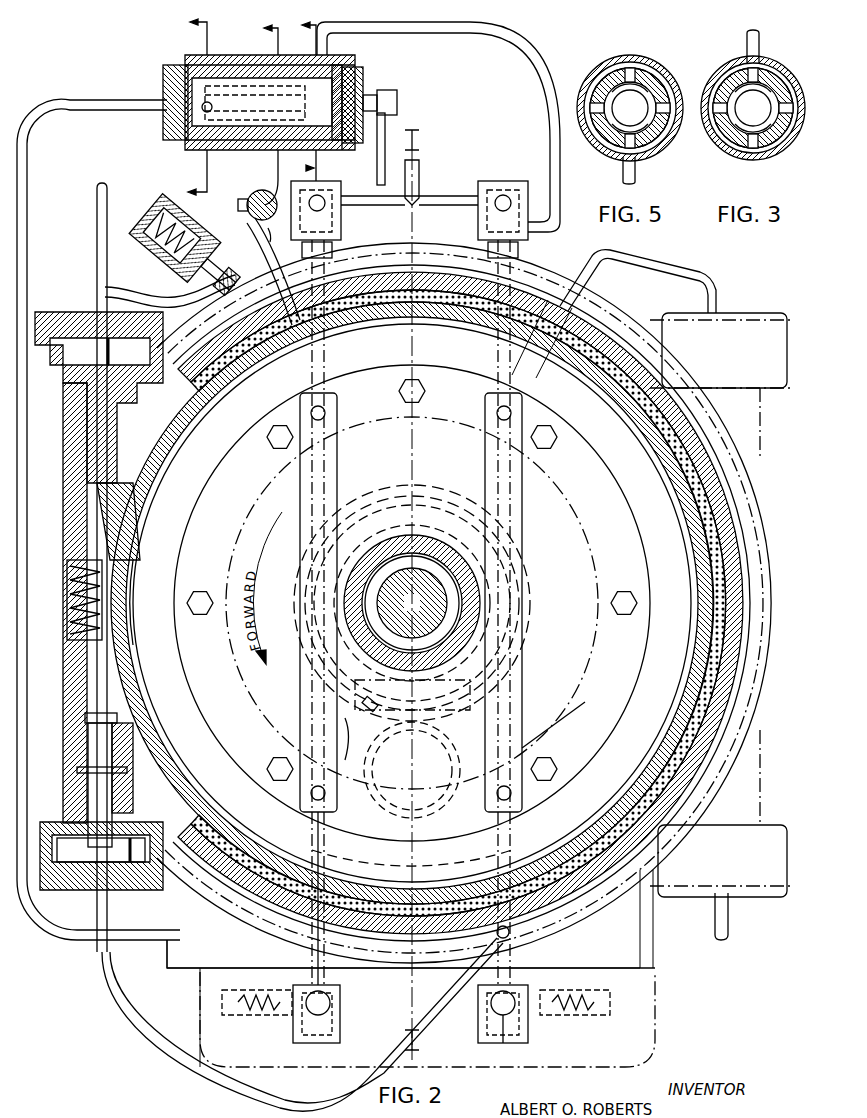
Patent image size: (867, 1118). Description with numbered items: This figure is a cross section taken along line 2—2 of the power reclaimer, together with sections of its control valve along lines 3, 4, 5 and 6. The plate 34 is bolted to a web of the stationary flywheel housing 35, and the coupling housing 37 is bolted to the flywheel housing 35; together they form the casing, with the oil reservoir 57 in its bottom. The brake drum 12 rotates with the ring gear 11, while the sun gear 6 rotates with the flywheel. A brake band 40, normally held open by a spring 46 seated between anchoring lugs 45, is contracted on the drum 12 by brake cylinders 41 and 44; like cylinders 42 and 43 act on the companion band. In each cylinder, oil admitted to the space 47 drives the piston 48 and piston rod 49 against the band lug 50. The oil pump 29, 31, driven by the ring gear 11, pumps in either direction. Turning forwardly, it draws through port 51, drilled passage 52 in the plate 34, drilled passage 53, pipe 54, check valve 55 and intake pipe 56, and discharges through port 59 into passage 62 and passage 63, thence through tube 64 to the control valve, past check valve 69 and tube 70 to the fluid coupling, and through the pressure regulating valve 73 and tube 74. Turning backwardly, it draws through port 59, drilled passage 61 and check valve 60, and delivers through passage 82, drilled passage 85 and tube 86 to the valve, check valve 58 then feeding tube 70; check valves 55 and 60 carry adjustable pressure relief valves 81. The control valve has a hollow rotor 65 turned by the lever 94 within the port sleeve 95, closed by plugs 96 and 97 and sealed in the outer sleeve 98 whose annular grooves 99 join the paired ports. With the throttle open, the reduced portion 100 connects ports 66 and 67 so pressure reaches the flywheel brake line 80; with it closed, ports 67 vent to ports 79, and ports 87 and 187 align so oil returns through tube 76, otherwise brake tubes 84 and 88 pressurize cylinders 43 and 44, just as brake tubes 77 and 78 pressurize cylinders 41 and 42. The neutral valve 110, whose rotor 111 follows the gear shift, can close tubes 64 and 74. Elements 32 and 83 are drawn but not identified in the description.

In FIG. 2, the axle shaft 2 is at (412, 603).
In FIG. 2, the valve port 3 is at (309, 94).
In FIG. 2, the valve port 4 is at (266, 106).
In FIG. 2, the hub 5 is at (480, 583).
In FIG. 2, the sun gear 6 is at (191, 117).
In FIG. 2, the ring gear 11 is at (380, 540).
In FIG. 2, the brake drum 12 is at (136, 693).
In FIG. 2, the pump gear 29 is at (428, 512).
In FIG. 2, the oil pump gear 31 is at (372, 714).
In FIG. 2, the bracket 32 is at (532, 690).
In FIG. 2, the plate 34 is at (648, 643).
In FIG. 2, the flywheel housing 35 is at (766, 684).
In FIG. 2, the coupling housing 37 is at (735, 503).
In FIG. 2, the brake band 40 is at (128, 660).
In FIG. 2, the brake cylinder 41 is at (75, 330).
In FIG. 2, the brake cylinder 42 is at (720, 813).
In FIG. 2, the brake cylinder 43 is at (720, 386).
In FIG. 2, the brake cylinder 44 is at (77, 895).
In FIG. 2, the anchoring lug 45 is at (128, 532).
In FIG. 2, the spring 46 is at (102, 583).
In FIG. 2, the space 47 is at (132, 890).
In FIG. 2, the piston 48 is at (101, 856).
In FIG. 2, the piston rod 49 is at (90, 746).
In FIG. 2, the band lug 50 is at (95, 716).
In FIG. 2, the port 51 is at (448, 712).
In FIG. 2, the drilled passage 52 is at (525, 738).
In FIG. 2, the drilled passage 53 is at (520, 842).
In FIG. 2, the pipe 54 is at (515, 945).
In FIG. 2, the check valve 55 is at (492, 1003).
In FIG. 2, the intake pipe 56 is at (520, 1045).
In FIG. 2, the reservoir 57 is at (628, 1015).
In FIG. 2, the check valve 58 is at (503, 200).
In FIG. 2, the port 59 is at (350, 745).
In FIG. 2, the check valve 60 is at (340, 996).
In FIG. 2, the drilled passage 61 is at (327, 855).
In FIG. 2, the passage 62 is at (338, 472).
In FIG. 2, the passage 63 is at (325, 352).
In FIG. 2, the tube 64 is at (273, 239).
In FIG. 5, the tube 64 is at (637, 172).
In FIG. 2, the rotor 65 is at (255, 103).
In FIG. 5, the rotor 65 is at (630, 108).
In FIG. 3, the rotor 65 is at (753, 108).
In FIG. 5, the port 66 is at (634, 72).
In FIG. 2, the port 67 is at (186, 60).
In FIG. 2, the check valve 69 is at (341, 216).
In FIG. 2, the tube 70 is at (420, 190).
In FIG. 2, the pressure regulating valve 73 is at (170, 258).
In FIG. 2, the tube 74 is at (238, 240).
In FIG. 2, the oil return tube 76 is at (90, 100).
In FIG. 2, the brake tube 77 is at (160, 298).
In FIG. 2, the brake tube 78 is at (97, 258).
In FIG. 2, the port 79 is at (203, 104).
In FIG. 2, the tube 80 is at (205, 170).
In FIG. 2, the pressure relief valve 81 is at (280, 1018).
In FIG. 2, the passage 82 is at (522, 516).
In FIG. 2, the conduit 83 is at (532, 372).
In FIG. 2, the brake tube 84 is at (632, 270).
In FIG. 2, the drilled passage 85 is at (498, 352).
In FIG. 2, the oil supply tube 86 is at (508, 58).
In FIG. 3, the oil supply tube 86 is at (760, 32).
In FIG. 2, the port 87 is at (337, 67).
In FIG. 3, the port 87 is at (764, 68).
In FIG. 2, the brake tube 88 is at (125, 1040).
In FIG. 2, the lever 94 is at (390, 135).
In FIG. 2, the valve port sleeve 95 is at (340, 150).
In FIG. 5, the valve port sleeve 95 is at (606, 70).
In FIG. 3, the valve port sleeve 95 is at (788, 80).
In FIG. 2, the plug 96 is at (163, 130).
In FIG. 2, the plug 97 is at (364, 100).
In FIG. 3, the outer sleeve 98 is at (722, 62).
In FIG. 5, the annular groove 99 is at (598, 88).
In FIG. 5, the reduced portion 100 is at (660, 140).
In FIG. 2, the neutral valve 110 is at (262, 222).
In FIG. 2, the rotor 111 is at (243, 207).
In FIG. 3, the port 187 is at (720, 85).